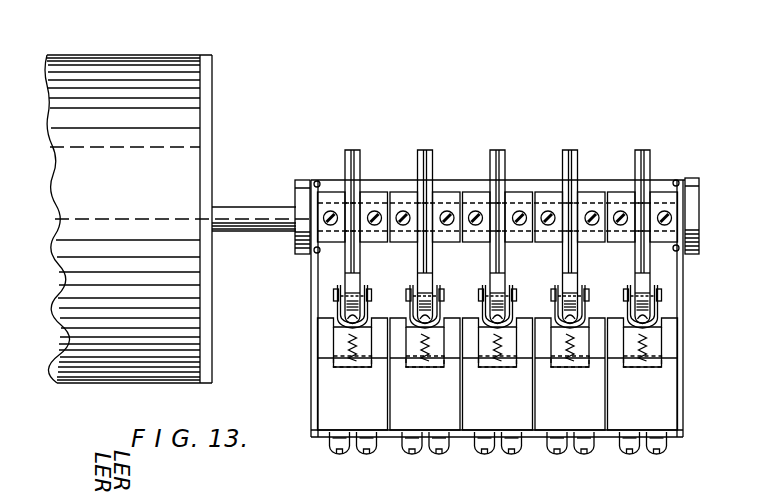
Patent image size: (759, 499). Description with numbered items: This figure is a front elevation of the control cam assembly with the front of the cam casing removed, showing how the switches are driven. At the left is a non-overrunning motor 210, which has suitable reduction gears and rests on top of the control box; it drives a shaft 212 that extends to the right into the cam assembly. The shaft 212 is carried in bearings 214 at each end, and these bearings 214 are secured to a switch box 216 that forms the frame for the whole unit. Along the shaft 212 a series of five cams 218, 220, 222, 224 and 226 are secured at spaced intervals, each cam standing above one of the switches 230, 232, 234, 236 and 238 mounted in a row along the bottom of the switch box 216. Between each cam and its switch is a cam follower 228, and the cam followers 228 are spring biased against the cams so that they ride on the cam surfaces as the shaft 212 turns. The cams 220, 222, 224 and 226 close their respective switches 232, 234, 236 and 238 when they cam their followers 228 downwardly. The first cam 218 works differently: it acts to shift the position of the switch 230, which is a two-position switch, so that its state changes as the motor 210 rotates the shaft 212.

The non-overrunning motor 210 is at (205, 102).
The shaft 212 is at (243, 206).
The bearings 214 is at (296, 243).
The switch box 216 is at (686, 284).
The cam 218 is at (352, 150).
The cam 220 is at (431, 150).
The cam 222 is at (502, 150).
The cam 224 is at (574, 150).
The cam 226 is at (646, 150).
The cam followers 228 is at (354, 283).
The switch 230 is at (358, 412).
The switch 232 is at (431, 412).
The switch 234 is at (503, 412).
The switch 236 is at (576, 412).
The switch 238 is at (648, 412).